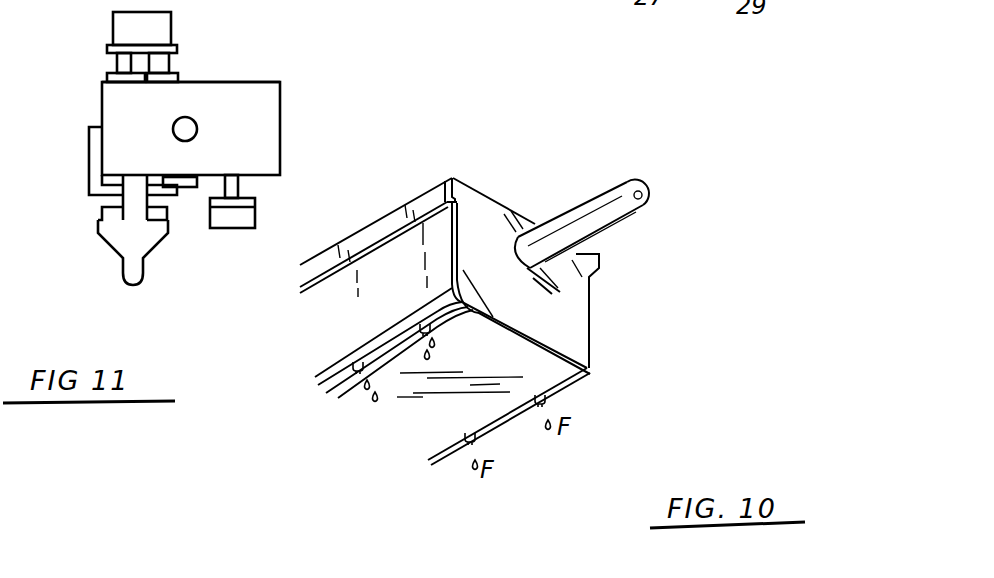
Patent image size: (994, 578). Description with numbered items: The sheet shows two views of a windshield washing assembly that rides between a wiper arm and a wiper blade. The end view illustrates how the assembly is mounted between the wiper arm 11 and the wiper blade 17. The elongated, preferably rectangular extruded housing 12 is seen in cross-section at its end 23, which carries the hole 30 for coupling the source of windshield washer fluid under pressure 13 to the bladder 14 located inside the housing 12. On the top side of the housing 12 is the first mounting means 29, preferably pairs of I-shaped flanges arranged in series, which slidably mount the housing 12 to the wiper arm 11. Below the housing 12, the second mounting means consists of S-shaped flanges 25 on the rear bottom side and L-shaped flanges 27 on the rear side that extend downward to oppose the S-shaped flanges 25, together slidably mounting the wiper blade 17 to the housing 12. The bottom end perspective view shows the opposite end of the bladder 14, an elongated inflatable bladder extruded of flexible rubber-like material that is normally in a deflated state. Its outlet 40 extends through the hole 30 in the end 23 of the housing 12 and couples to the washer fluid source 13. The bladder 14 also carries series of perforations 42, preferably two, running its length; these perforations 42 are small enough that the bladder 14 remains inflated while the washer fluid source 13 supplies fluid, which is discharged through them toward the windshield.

In FIG. 11, the wiper arm 11 is at (149, 36).
In FIG. 11, the housing 12 is at (267, 80).
In FIG. 11, the source of windshield washer fluid under pressure 13 is at (263, 197).
In FIG. 10, the bladder 14 is at (337, 312).
In FIG. 11, the wiper blade 17 is at (108, 247).
In FIG. 11, the end 23 is at (261, 164).
In FIG. 10, the end 23 is at (572, 312).
In FIG. 11, the S-shaped flanges 25 is at (185, 190).
In FIG. 11, the L-shaped flanges 27 is at (88, 185).
In FIG. 11, the first mounting means 29 is at (110, 78).
In FIG. 11, the hole 30 is at (173, 121).
In FIG. 10, the outlet 40 is at (594, 198).
In FIG. 10, the perforations 42 is at (352, 382).